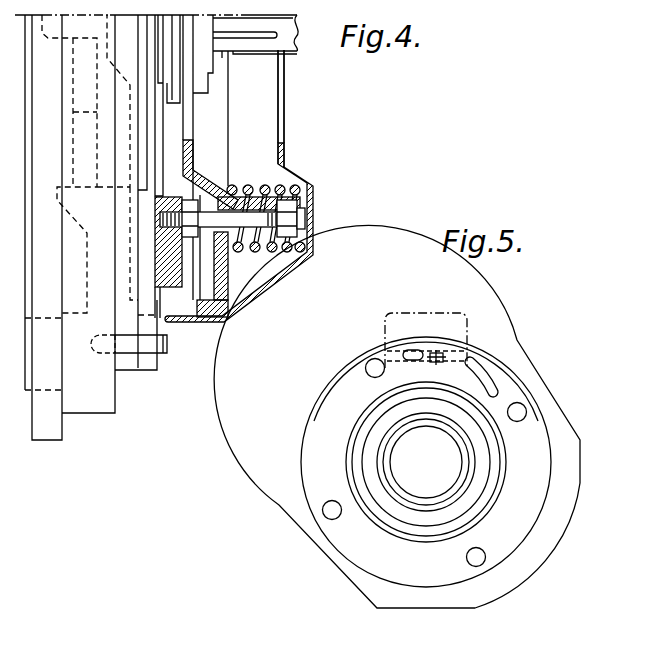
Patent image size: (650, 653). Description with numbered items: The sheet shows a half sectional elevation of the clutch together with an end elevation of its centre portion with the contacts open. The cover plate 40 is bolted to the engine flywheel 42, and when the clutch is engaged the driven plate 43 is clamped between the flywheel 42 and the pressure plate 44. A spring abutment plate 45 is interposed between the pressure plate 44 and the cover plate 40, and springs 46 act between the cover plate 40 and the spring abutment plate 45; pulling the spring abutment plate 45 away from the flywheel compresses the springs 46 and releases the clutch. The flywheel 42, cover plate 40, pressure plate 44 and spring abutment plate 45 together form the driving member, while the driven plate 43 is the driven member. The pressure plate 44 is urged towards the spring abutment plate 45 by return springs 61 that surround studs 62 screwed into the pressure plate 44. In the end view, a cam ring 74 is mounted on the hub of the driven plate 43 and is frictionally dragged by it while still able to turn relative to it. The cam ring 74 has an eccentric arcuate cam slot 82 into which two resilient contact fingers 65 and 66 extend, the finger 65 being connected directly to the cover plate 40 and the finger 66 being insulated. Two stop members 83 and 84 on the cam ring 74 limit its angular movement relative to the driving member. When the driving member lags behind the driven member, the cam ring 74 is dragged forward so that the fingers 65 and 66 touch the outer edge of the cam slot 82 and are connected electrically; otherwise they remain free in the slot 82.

In FIG. 4, the cover plate 40 is at (313, 190).
In FIG. 4, the engine flywheel 42 is at (92, 406).
In FIG. 4, the driven plate 43 is at (153, 176).
In FIG. 4, the pressure plate 44 is at (171, 280).
In FIG. 4, the spring abutment plate 45 is at (211, 318).
In FIG. 4, the springs 46 is at (282, 186).
In FIG. 4, the return springs 61 is at (279, 248).
In FIG. 4, the studs 62 is at (265, 250).
In FIG. 5, the contact finger 65 is at (413, 352).
In FIG. 5, the contact finger 66 is at (437, 352).
In FIG. 5, the cam ring 74 is at (330, 425).
In FIG. 5, the cam slot 82 is at (488, 378).
In FIG. 5, the stop member 83 is at (373, 368).
In FIG. 5, the stop member 84 is at (522, 407).